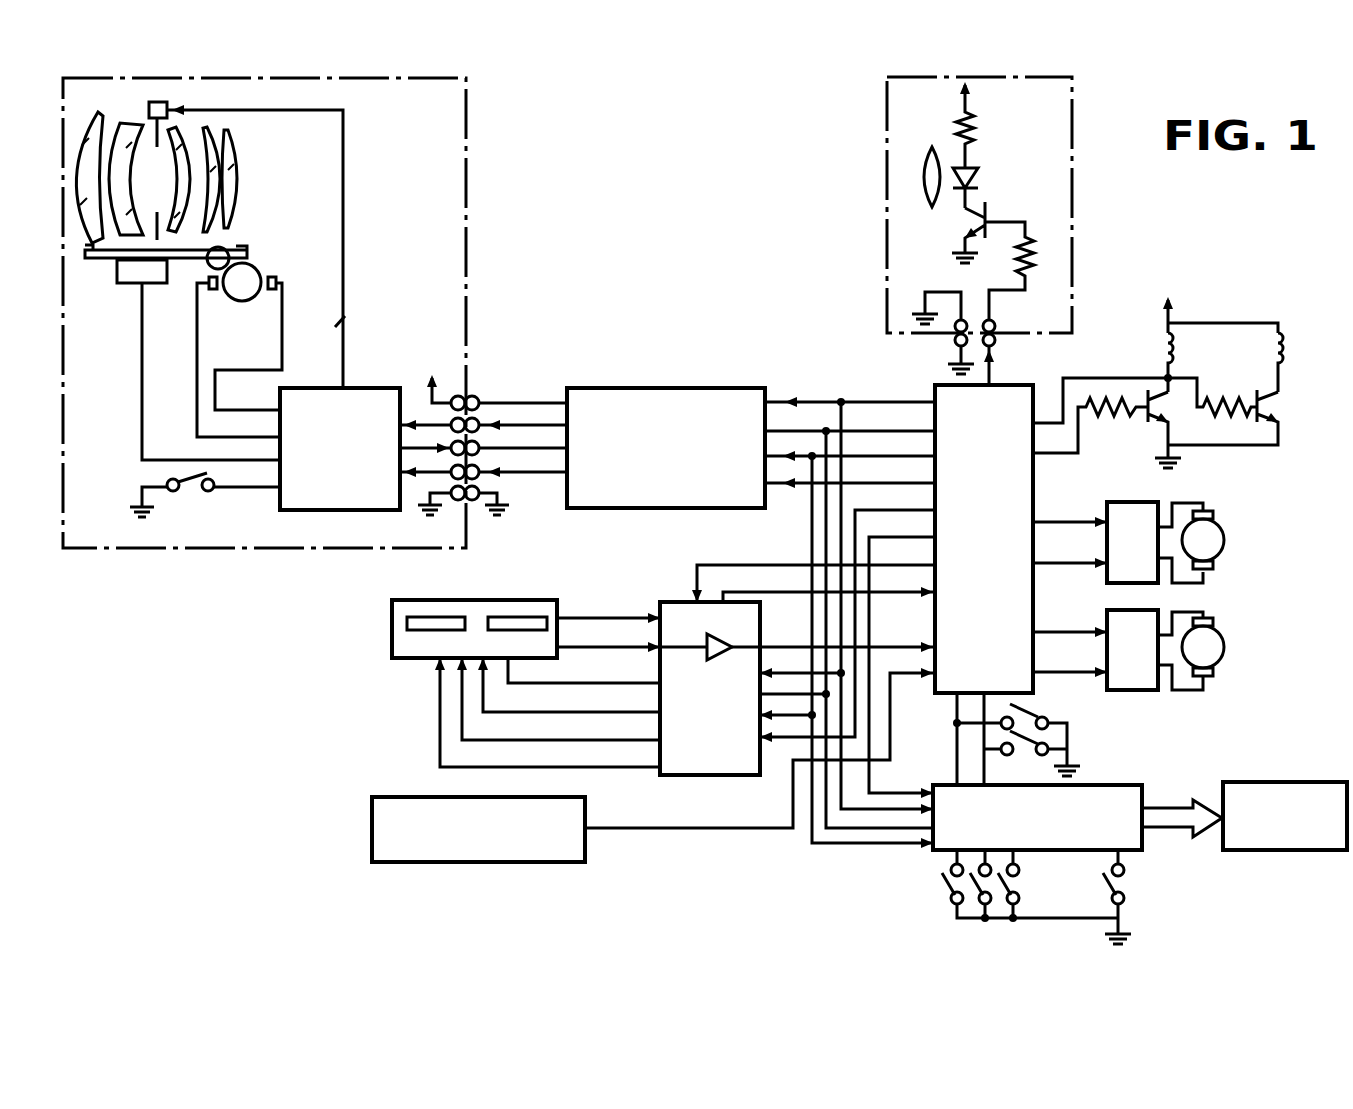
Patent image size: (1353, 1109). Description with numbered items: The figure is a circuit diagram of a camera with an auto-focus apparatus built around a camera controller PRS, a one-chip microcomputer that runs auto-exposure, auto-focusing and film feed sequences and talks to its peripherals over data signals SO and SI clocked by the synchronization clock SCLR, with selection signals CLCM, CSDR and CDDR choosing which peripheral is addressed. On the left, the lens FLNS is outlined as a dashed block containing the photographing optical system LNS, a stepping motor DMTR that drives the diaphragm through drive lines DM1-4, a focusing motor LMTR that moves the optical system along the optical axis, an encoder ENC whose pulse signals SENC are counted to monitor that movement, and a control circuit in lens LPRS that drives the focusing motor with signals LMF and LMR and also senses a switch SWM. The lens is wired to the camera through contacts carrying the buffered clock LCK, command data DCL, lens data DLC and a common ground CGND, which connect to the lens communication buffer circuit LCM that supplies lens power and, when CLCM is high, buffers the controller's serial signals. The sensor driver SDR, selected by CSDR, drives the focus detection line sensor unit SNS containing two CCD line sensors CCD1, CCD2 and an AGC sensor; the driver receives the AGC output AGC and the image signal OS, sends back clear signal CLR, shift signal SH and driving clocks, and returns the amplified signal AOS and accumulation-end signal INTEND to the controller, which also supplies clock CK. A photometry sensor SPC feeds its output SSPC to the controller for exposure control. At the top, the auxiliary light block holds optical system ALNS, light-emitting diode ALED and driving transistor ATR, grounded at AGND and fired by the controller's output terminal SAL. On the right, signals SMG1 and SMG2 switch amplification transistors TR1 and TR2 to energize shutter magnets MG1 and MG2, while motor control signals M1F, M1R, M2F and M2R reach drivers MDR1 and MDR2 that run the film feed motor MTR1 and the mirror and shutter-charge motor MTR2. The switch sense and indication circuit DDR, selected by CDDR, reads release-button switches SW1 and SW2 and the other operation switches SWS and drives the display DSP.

The lens FLNS is at (468, 81).
The stepping motor DMTR is at (168, 98).
The photographing lens LNS is at (240, 158).
The focusing motor LMTR is at (254, 267).
The encoder ENC is at (123, 283).
The pulse signals SENC is at (211, 373).
The focusing motor drive signal LMF is at (248, 348).
The focusing motor drive signal LMR is at (238, 360).
The manual focus switch SWM is at (205, 490).
The control circuit in lens LPRS is at (282, 508).
The diaphragm motor drive signals DM1-4 is at (377, 327).
The command data signal DCL is at (483, 419).
The lens data signal DLC is at (483, 442).
The lens clock signal LCK is at (483, 464).
The common ground CGND is at (490, 500).
The lens communication buffer circuit LCM is at (733, 387).
The data signal SO is at (847, 598).
The data signal SI is at (847, 619).
The synchronization clock signal SCLR is at (847, 641).
The communication selection signal CLCM is at (850, 475).
The communication selection signal CSDR is at (847, 615).
The communication selection signal CDDR is at (901, 657).
The clock signal CK is at (813, 572).
The accumulation end signal INTEND is at (826, 585).
The amplified output signal AOS is at (847, 639).
The camera controller PRS is at (1017, 385).
The optical system ALNS is at (923, 163).
The auxiliary light source ALED is at (975, 178).
The driving transistor ATR is at (990, 211).
The auxiliary light ground AGND is at (942, 321).
The output terminal SAL is at (1010, 342).
The magnet MG1 is at (1315, 362).
The magnet MG2 is at (1210, 362).
The amplification transistor TR1 is at (1282, 419).
The amplification transistor TR2 is at (1172, 417).
The magnet control signal SMG1 is at (1145, 389).
The magnet control signal SMG2 is at (1090, 439).
The motor driver MDR1 is at (1160, 502).
The motor driver MDR2 is at (1150, 690).
The motor control signal M1F is at (1070, 512).
The motor control signal M1R is at (1070, 552).
The motor control signal M2F is at (1070, 622).
The motor control signal M2R is at (1070, 662).
The motor MTR1 is at (1224, 540).
The motor MTR2 is at (1224, 647).
The focus detection line sensor unit SNS is at (433, 633).
The CCD line sensor CCD1 is at (434, 638).
The CCD line sensor CCD2 is at (517, 638).
The AGC sensor output AGC is at (608, 610).
The output signal OS is at (658, 639).
The shift signal SH is at (558, 699).
The clear signal CLR is at (547, 712).
The sensor driver SDR is at (730, 776).
The photometry sensor SPC is at (372, 852).
The photometry output signal SSPC is at (760, 748).
The switch sense and indication circuit DDR is at (1120, 785).
The switch SW1 is at (1027, 729).
The switch SW2 is at (1032, 759).
The switches SWS is at (1073, 897).
The display DSP is at (1316, 782).